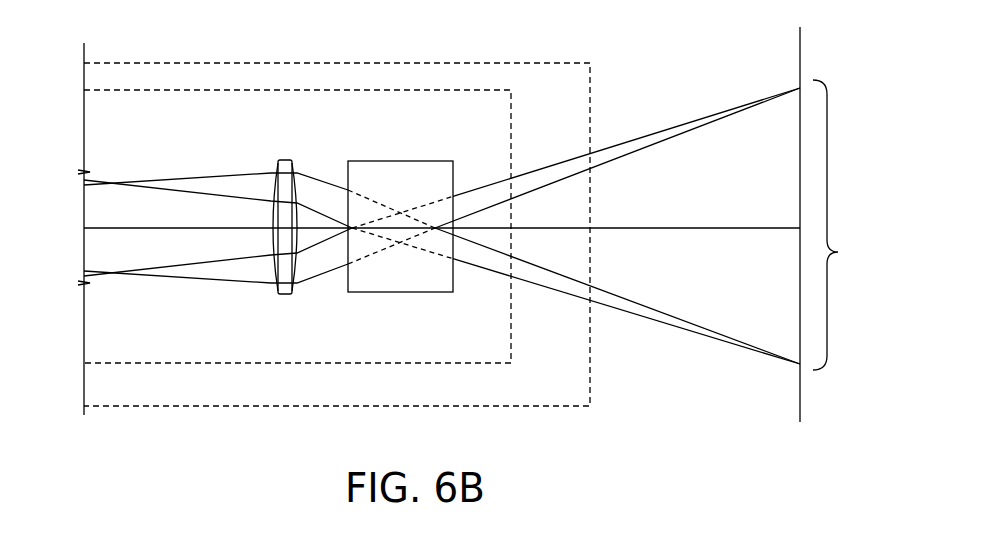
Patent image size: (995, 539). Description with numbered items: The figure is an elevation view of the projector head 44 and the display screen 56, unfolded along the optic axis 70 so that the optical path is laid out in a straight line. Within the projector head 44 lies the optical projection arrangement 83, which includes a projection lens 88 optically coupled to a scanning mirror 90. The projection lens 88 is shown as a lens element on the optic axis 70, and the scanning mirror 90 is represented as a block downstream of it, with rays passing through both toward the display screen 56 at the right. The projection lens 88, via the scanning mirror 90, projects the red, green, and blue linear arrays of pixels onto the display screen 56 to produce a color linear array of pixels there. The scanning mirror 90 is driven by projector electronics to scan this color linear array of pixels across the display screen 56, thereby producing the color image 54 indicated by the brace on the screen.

The projector head 44 is at (447, 407).
The color image 54 is at (846, 225).
The display screen 56 is at (800, 45).
The optic axis 70 is at (632, 227).
The optical projection arrangement 83 is at (513, 345).
The projection lens 88 is at (284, 158).
The scanning mirror 90 is at (443, 160).